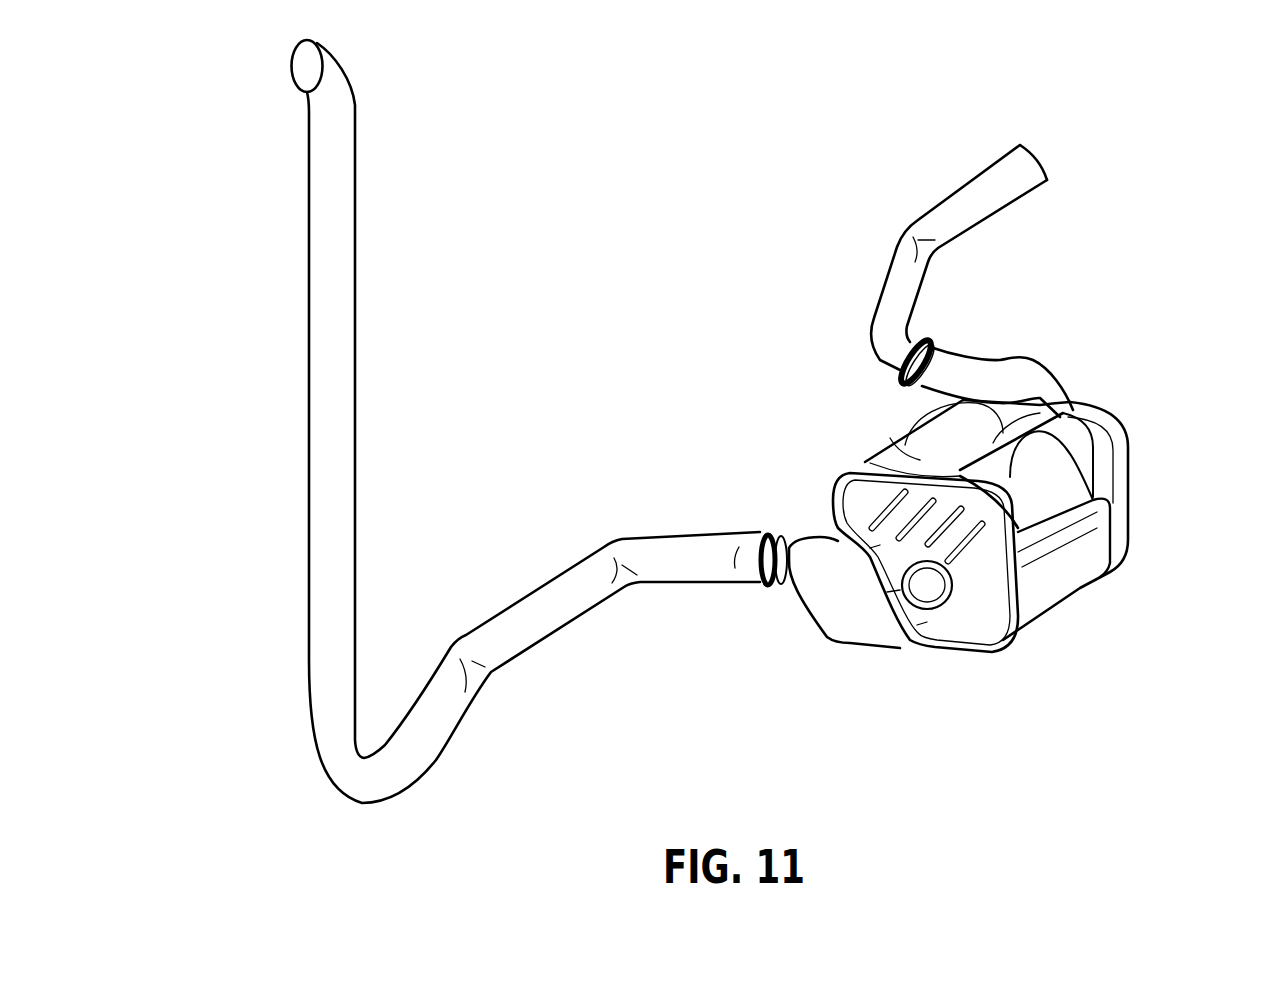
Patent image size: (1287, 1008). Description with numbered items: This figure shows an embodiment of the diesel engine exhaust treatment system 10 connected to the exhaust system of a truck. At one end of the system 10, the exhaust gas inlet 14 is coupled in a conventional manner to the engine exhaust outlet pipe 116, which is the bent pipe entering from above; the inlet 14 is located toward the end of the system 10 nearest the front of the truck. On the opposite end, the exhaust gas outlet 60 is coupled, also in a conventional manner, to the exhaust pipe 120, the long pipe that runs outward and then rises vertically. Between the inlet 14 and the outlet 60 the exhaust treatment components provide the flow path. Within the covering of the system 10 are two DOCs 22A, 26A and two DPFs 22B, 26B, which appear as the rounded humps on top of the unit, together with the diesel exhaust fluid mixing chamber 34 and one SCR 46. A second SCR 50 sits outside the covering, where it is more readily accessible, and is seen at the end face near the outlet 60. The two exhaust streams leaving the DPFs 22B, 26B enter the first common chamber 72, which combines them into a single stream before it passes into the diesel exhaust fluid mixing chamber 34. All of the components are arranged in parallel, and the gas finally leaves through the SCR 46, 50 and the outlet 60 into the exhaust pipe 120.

The diesel engine exhaust treatment system 10 is at (965, 545).
The exhaust gas inlet 14 is at (925, 342).
The DOC 22A is at (972, 403).
The DPF 22B is at (905, 432).
The DOC 26A is at (1083, 460).
The DPF 26B is at (1048, 483).
The diesel exhaust fluid mixing chamber 34 is at (1063, 590).
The SCR 46 is at (930, 617).
The SCR 50 is at (833, 523).
The exhaust gas outlet 60 is at (765, 585).
The first common chamber 72 is at (977, 622).
The engine exhaust outlet pipe 116 is at (987, 202).
The exhaust pipe 120 is at (313, 438).